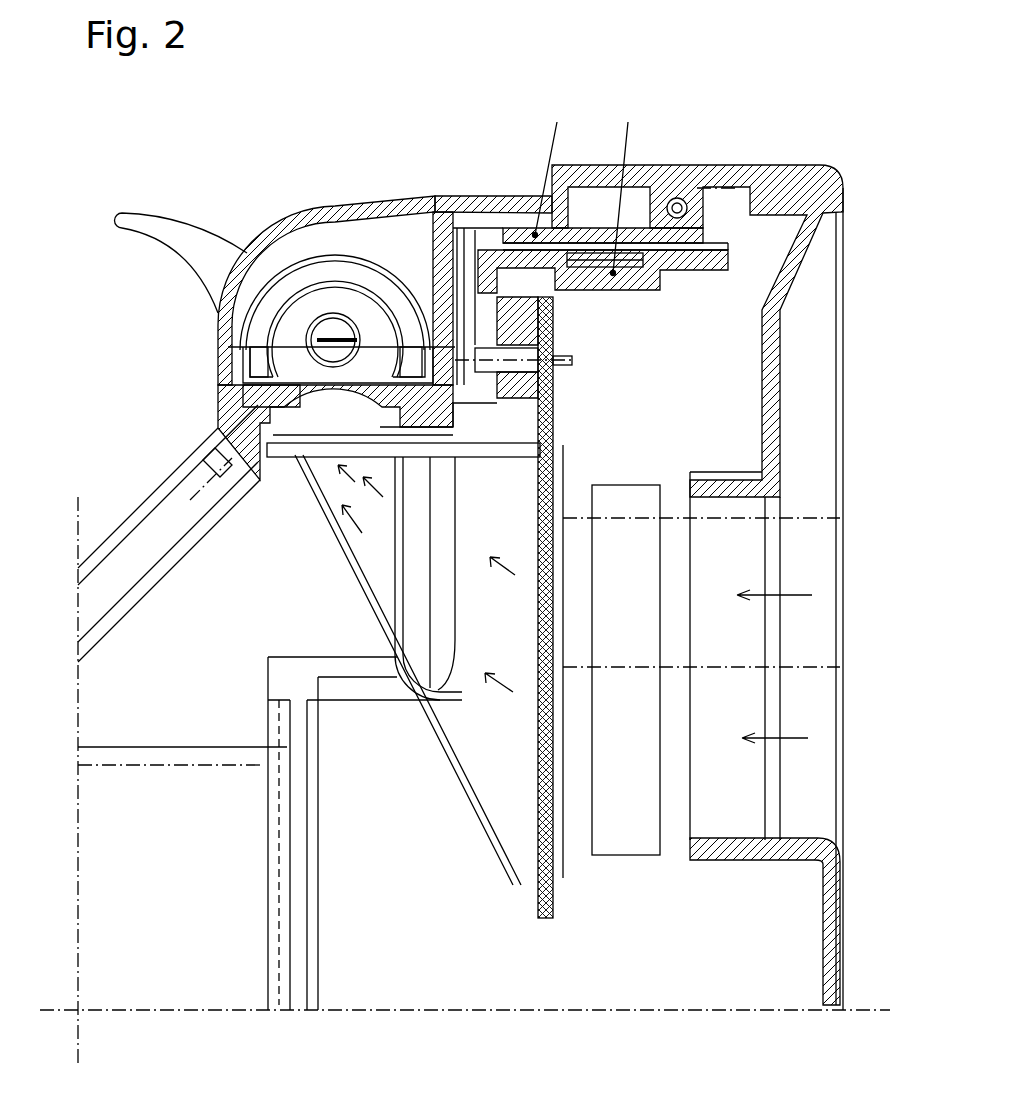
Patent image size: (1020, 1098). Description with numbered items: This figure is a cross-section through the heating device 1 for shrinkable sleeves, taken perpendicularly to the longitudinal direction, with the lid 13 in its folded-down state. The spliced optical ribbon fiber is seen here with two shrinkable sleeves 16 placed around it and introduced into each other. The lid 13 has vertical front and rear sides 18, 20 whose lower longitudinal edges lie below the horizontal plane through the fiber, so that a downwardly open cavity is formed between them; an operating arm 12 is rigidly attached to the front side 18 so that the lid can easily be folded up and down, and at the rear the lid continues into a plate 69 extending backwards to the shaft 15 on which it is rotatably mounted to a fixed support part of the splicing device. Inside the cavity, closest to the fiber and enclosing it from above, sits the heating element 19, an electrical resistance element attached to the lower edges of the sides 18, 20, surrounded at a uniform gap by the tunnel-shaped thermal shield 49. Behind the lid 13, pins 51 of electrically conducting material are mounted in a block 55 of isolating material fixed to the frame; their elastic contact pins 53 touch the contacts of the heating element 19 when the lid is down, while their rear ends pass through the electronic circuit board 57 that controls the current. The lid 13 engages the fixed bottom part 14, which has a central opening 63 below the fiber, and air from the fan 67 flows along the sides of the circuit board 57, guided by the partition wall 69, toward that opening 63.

The heating device 1 is at (285, 257).
The operating arm 12 is at (185, 233).
The lid 13 is at (333, 217).
The bottom part 14 is at (237, 405).
The shaft 15 is at (677, 208).
The shrinkable sleeves 16 is at (348, 317).
The front side 18 is at (228, 328).
The heating element 19 is at (282, 305).
The rear side 20 is at (447, 255).
The thermal shield 49 is at (302, 263).
The pins 51 is at (555, 392).
The elastic contact pins 53 is at (478, 237).
The block 55 is at (517, 333).
The electronic circuit board 57 is at (548, 882).
The opening 63 is at (332, 413).
The fan 67 is at (627, 770).
The partition wall 69 is at (510, 200).